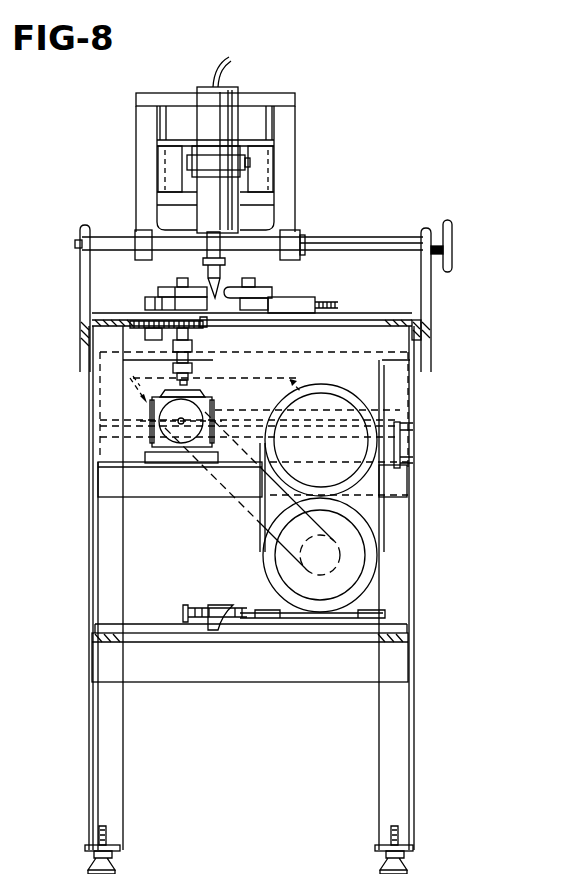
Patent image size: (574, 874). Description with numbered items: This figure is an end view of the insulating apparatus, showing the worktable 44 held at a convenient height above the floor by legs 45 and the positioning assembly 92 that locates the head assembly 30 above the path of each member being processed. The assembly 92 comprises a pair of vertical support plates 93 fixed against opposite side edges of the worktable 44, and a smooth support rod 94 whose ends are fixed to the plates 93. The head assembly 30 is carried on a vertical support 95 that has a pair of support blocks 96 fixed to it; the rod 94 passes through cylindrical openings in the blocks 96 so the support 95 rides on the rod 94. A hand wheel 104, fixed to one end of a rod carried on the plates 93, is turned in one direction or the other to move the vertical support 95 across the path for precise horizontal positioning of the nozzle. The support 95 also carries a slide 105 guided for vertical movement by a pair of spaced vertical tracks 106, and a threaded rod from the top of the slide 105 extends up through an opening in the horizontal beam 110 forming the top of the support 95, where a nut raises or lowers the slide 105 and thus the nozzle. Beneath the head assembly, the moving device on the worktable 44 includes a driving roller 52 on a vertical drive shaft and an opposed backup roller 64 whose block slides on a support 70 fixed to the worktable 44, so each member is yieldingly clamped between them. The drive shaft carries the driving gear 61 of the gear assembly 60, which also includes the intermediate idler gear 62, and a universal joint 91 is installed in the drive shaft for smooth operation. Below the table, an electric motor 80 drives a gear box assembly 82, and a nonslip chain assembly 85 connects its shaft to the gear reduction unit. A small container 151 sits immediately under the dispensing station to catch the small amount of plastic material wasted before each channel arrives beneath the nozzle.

The horizontal beam 110 is at (176, 92).
The vertical tracks 106 is at (160, 110).
The vertical support 95 is at (145, 135).
The positioning assembly 92 is at (318, 128).
The slide 105 is at (258, 150).
The head assembly 30 is at (183, 214).
The support blocks 96 is at (135, 237).
The support rod 94 is at (352, 240).
The hand wheel 104 is at (452, 245).
The driving roller 52 is at (178, 290).
The backup roller 64 is at (275, 292).
The support 70 is at (306, 300).
The worktable 44 is at (392, 308).
The vertical support plates 93 is at (80, 308).
The driving gear 61 is at (207, 327).
The universal joint 91 is at (195, 366).
The intermediate idler gear 62 is at (135, 339).
The gear assembly 60 is at (160, 352).
The small container 151 is at (91, 452).
The electric motor 80 is at (320, 407).
The nonslip chain assembly 85 is at (240, 503).
The gear box assembly 82 is at (285, 568).
The legs 45 is at (89, 565).